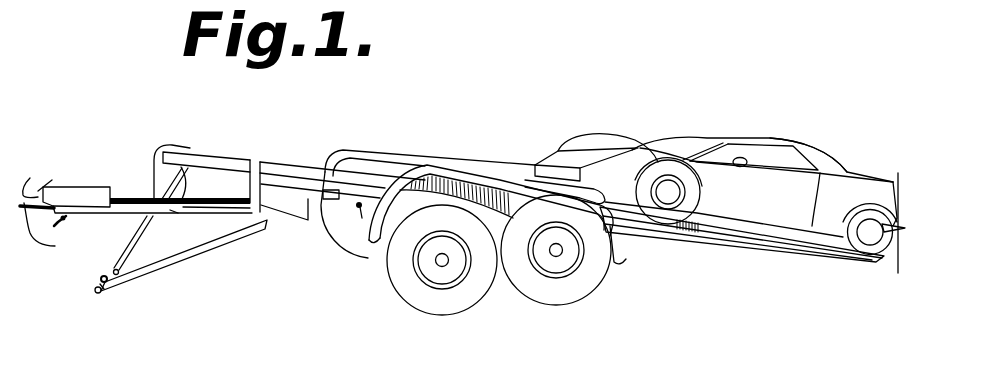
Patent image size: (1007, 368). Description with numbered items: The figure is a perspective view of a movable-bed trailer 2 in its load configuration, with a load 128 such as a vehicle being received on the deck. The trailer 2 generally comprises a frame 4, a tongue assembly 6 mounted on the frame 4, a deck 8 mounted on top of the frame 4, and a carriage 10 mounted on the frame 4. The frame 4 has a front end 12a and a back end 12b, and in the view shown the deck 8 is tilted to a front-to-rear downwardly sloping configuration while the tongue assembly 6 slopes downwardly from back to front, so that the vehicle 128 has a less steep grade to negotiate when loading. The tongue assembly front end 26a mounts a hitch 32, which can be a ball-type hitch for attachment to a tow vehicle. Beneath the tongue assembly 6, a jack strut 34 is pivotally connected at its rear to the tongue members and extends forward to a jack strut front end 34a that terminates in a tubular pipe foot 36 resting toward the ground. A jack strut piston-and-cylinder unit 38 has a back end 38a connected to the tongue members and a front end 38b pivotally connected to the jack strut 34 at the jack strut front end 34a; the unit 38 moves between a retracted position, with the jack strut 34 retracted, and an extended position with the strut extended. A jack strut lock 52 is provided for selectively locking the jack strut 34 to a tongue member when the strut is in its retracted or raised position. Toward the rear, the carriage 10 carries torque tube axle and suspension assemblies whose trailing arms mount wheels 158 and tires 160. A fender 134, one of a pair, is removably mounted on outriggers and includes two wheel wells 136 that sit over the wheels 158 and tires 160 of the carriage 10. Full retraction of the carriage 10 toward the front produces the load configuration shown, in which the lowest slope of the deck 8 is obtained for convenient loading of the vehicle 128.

The movable-bed trailer 2 is at (715, 165).
The frame 4 is at (704, 246).
The tongue assembly 6 is at (113, 142).
The deck 8 is at (243, 147).
The carriage 10 is at (575, 259).
The frame front end 12a is at (200, 147).
The frame back end 12b is at (806, 260).
The tongue assembly front end 26a is at (30, 178).
The hitch 32 is at (138, 229).
The jack strut 34 is at (192, 252).
The jack strut front end 34a is at (106, 289).
The tubular pipe foot 36 is at (95, 297).
The jack strut piston-and-cylinder unit 38 is at (140, 226).
The piston-and-cylinder unit back end 38a is at (111, 270).
The piston-and-cylinder unit front end 38b is at (176, 212).
The jack strut lock 52 is at (68, 221).
The load 128 is at (814, 148).
The fender 134 is at (617, 242).
The wheel well 136 is at (597, 222).
The wheel 158 is at (412, 278).
The tire 160 is at (375, 262).